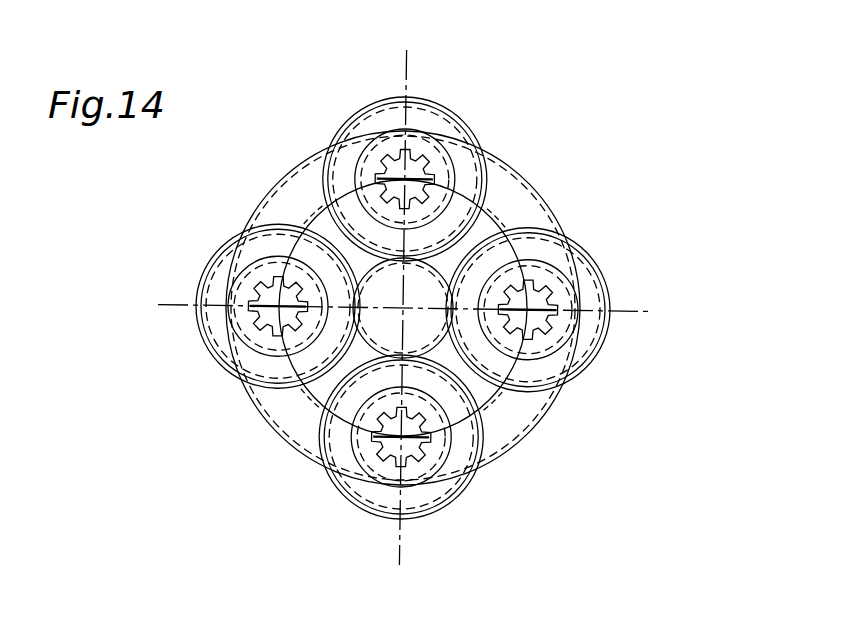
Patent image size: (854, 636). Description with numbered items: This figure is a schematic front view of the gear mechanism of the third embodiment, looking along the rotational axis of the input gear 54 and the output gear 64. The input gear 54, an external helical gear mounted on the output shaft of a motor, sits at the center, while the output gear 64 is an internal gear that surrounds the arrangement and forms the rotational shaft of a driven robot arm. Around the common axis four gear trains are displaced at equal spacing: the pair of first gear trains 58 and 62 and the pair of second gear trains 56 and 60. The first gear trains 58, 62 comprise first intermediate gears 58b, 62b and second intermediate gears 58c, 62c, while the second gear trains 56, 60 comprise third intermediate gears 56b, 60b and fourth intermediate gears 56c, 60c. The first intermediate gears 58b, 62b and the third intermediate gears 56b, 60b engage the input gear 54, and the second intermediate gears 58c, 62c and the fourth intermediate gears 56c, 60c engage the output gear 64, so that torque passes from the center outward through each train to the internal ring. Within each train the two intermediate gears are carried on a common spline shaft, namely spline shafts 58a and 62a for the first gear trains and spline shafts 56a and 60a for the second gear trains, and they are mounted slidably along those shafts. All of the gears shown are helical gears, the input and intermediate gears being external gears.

The input gear 54 is at (365, 356).
The second gear train 56 is at (576, 335).
The spline shaft 56a is at (546, 332).
The third intermediate gear 56b is at (608, 289).
The fourth intermediate gear 56c is at (581, 243).
The first gear train 58 is at (464, 132).
The spline shaft 58a is at (430, 176).
The first intermediate gear 58b is at (448, 148).
The second intermediate gear 58c is at (462, 130).
The second gear train 60 is at (235, 310).
The spline shaft 60a is at (248, 324).
The third intermediate gear 60b is at (205, 265).
The fourth intermediate gear 60c is at (260, 257).
The first gear train 62 is at (413, 460).
The spline shaft 62a is at (428, 437).
The first intermediate gear 62b is at (463, 493).
The second intermediate gear 62c is at (360, 470).
The output gear 64 is at (330, 146).